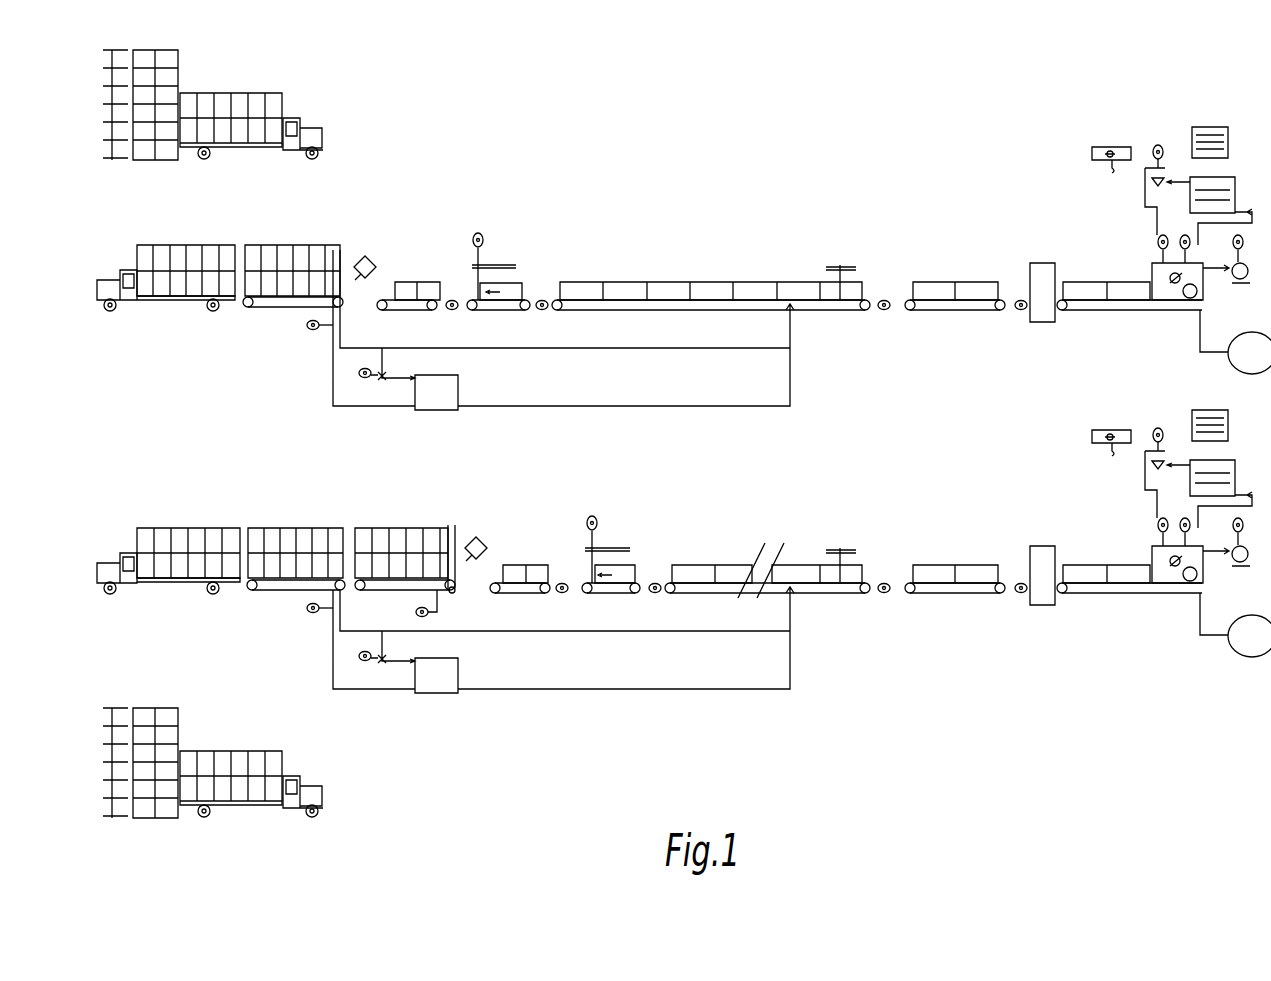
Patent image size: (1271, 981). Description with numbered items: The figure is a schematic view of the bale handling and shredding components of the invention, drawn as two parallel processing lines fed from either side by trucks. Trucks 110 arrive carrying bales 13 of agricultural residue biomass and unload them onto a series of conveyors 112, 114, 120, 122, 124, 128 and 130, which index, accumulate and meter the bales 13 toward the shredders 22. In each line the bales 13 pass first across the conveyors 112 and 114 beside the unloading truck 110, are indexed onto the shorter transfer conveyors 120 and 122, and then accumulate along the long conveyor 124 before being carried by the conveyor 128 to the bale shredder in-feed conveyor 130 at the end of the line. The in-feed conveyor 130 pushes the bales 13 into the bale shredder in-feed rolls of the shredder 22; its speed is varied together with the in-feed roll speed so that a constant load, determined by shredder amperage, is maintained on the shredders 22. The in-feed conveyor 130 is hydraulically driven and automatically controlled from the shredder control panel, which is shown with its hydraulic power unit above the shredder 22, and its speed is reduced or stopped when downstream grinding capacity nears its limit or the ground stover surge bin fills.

The bales 13 is at (272, 258).
The shredders 22 is at (1205, 303).
The trucks 110 is at (138, 312).
The conveyor 112 is at (293, 588).
The conveyor 114 is at (270, 307).
The conveyor 120 is at (403, 312).
The conveyor 122 is at (495, 312).
The conveyor 124 is at (680, 310).
The conveyor 128 is at (950, 312).
The bale shredder in-feed conveyor 130 is at (1118, 312).